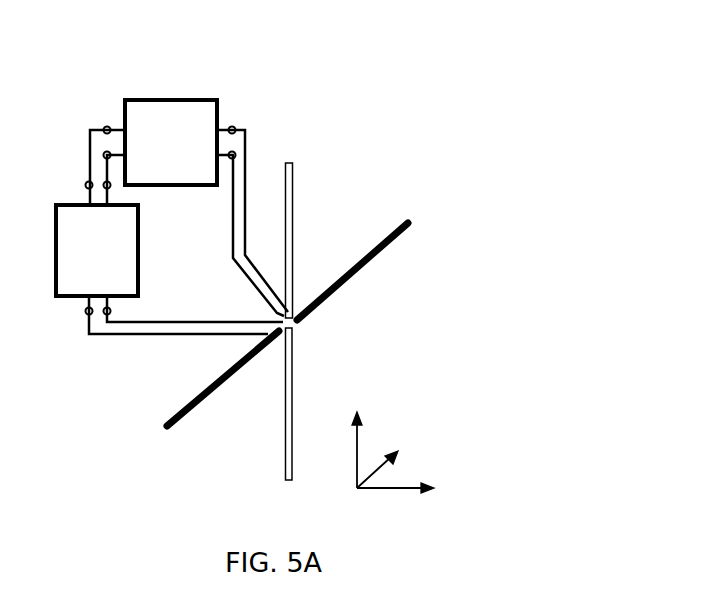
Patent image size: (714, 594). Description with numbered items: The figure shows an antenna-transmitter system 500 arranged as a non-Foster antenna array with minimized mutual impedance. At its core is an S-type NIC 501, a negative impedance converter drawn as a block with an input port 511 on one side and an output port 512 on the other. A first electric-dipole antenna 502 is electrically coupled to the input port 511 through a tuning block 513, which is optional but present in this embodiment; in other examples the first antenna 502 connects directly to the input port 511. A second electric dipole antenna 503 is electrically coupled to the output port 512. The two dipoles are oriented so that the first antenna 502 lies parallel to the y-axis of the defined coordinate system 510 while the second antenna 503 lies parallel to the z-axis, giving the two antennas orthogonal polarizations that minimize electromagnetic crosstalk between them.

The antenna-transmitter system 500 is at (438, 74).
The S-type NIC 501 is at (168, 97).
The first electric-dipole antenna 502 is at (409, 220).
The second electric dipole antenna 503 is at (293, 163).
The coordinate system 510 is at (382, 493).
The input port 511 is at (103, 125).
The output port 512 is at (235, 125).
The tuning block 513 is at (132, 260).